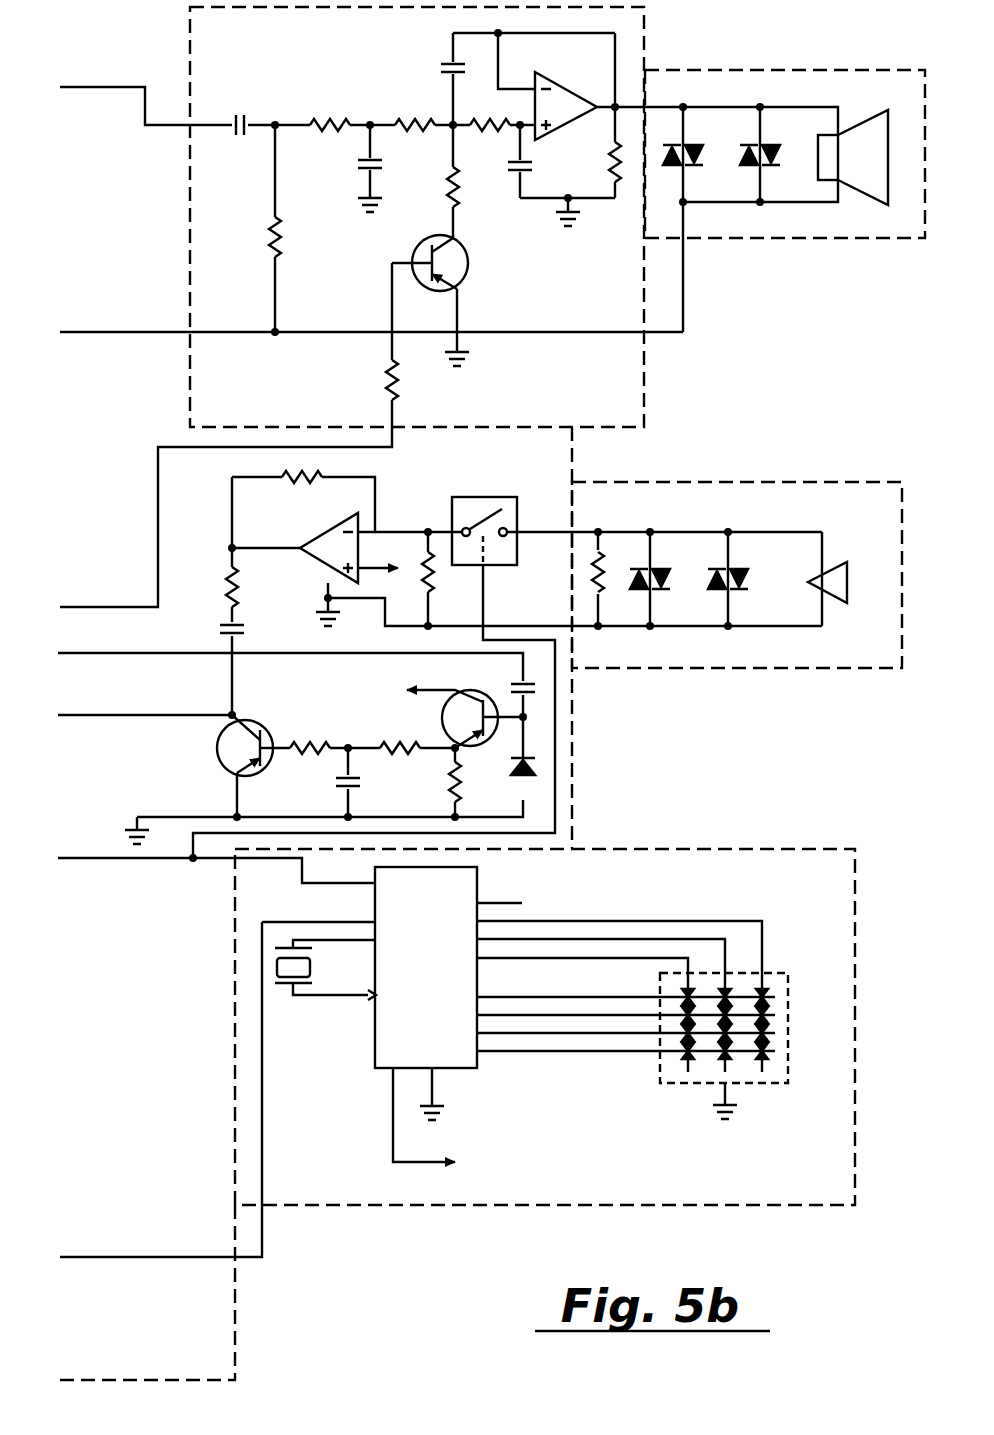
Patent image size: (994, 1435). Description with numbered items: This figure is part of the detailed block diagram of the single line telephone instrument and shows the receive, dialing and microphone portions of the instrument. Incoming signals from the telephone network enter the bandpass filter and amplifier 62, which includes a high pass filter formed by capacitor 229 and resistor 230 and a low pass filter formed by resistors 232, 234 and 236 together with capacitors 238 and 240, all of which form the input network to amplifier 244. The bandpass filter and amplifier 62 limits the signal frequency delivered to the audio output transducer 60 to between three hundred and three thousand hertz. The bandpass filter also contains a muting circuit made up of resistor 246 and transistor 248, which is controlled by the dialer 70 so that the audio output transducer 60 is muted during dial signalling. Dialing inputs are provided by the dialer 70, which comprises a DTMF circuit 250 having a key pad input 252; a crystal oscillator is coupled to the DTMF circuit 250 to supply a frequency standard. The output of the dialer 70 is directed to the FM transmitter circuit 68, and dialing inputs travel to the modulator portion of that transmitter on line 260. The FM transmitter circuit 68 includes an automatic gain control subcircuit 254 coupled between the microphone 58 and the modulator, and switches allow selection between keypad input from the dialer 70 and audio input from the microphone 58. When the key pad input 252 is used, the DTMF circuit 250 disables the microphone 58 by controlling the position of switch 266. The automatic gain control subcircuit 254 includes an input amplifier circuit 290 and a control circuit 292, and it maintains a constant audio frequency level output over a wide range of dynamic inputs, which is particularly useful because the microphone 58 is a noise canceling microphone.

The microphone 58 is at (796, 473).
The audio output transducer 60 is at (740, 66).
The bandpass filter and amplifier 62 is at (180, 46).
The FM transmitter circuit 68 is at (244, 1303).
The dialer 70 is at (736, 836).
The capacitor 229 is at (238, 114).
The resistor 230 is at (280, 252).
The resistor 232 is at (322, 117).
The resistor 234 is at (410, 133).
The resistor 236 is at (502, 118).
The capacitor 238 is at (358, 163).
The capacitor 240 is at (440, 68).
The amplifier 244 is at (561, 95).
The resistor 246 is at (462, 186).
The transistor 248 is at (458, 265).
The DTMF circuit 250 is at (388, 1047).
The key pad input 252 is at (663, 1077).
The automatic gain control subcircuit 254 is at (135, 592).
The line 260 is at (155, 1255).
The switch 266 is at (482, 503).
The input amplifier circuit 290 is at (326, 530).
The control circuit 292 is at (357, 738).